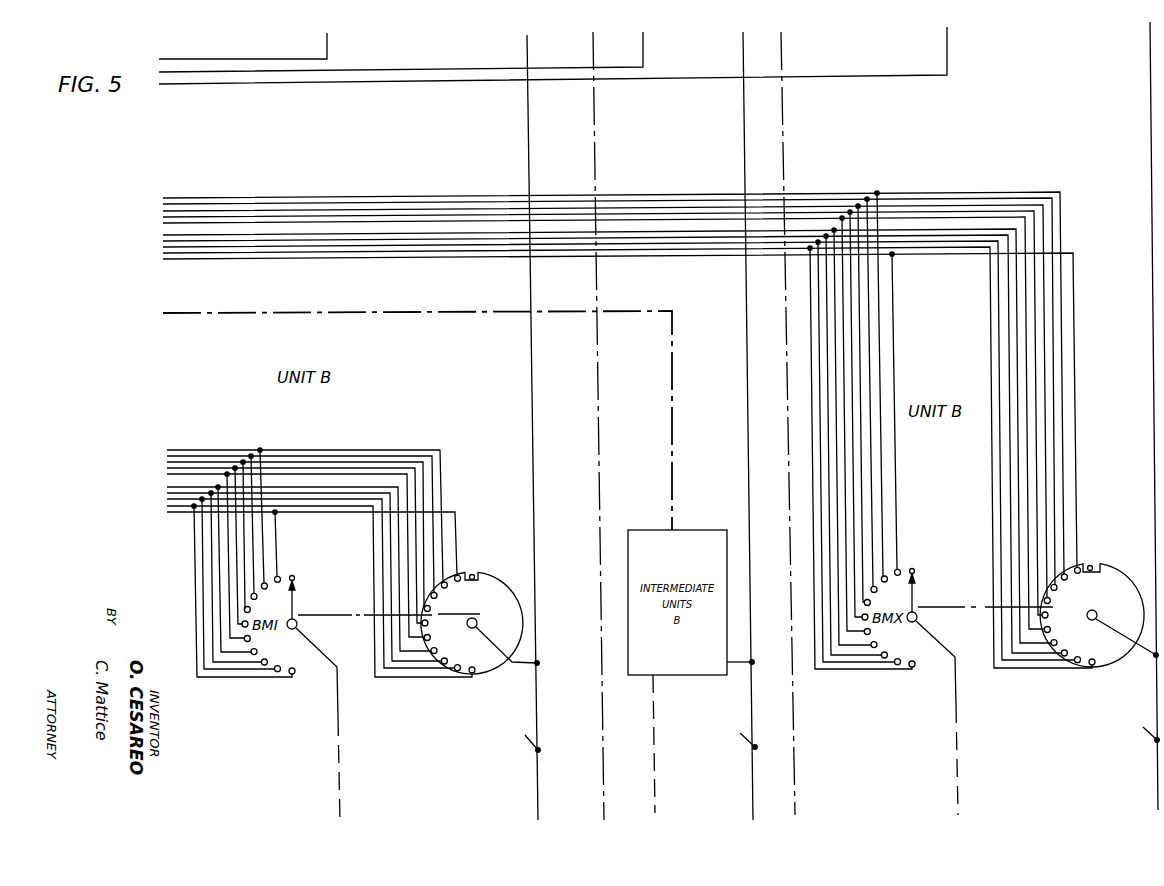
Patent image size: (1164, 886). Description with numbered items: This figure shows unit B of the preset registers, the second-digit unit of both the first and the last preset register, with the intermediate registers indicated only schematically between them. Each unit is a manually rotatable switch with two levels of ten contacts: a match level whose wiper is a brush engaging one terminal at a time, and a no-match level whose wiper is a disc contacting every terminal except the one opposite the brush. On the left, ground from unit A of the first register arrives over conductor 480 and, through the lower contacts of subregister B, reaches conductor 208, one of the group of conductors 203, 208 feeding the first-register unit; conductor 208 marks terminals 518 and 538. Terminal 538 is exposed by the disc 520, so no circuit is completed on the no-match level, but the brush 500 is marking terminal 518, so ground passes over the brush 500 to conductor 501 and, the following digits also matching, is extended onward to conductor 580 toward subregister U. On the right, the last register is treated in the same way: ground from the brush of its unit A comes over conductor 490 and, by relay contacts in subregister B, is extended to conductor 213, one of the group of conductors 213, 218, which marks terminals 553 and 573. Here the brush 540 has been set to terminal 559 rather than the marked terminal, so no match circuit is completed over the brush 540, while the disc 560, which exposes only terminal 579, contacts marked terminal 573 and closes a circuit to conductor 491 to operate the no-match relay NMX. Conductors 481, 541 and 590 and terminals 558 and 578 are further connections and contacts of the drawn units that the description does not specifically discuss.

The conductor 480 is at (195, 58).
The conductor 490 is at (905, 77).
The conductor 213 is at (392, 206).
The conductors 218 is at (255, 258).
The conductor 481 is at (533, 447).
The conductor 491 is at (1155, 411).
The conductors 203 is at (363, 459).
The conductor 208 is at (317, 500).
The brush 500 is at (293, 601).
The conductor 501 is at (338, 697).
The terminal 518 is at (279, 665).
The disc 520 is at (480, 611).
The terminal 538 is at (458, 664).
The brush 540 is at (913, 587).
The wiper lead of switch BMX 541 is at (956, 680).
The terminal 553 is at (870, 603).
The contact of switch BMX 558 is at (897, 665).
The terminal 559 is at (915, 655).
The disc 560 is at (1099, 617).
The terminal 573 is at (1051, 604).
The contact of switch BNX 578 is at (1077, 656).
The terminal 579 is at (1095, 667).
The conductor 580 is at (340, 810).
The lead 590 is at (958, 800).